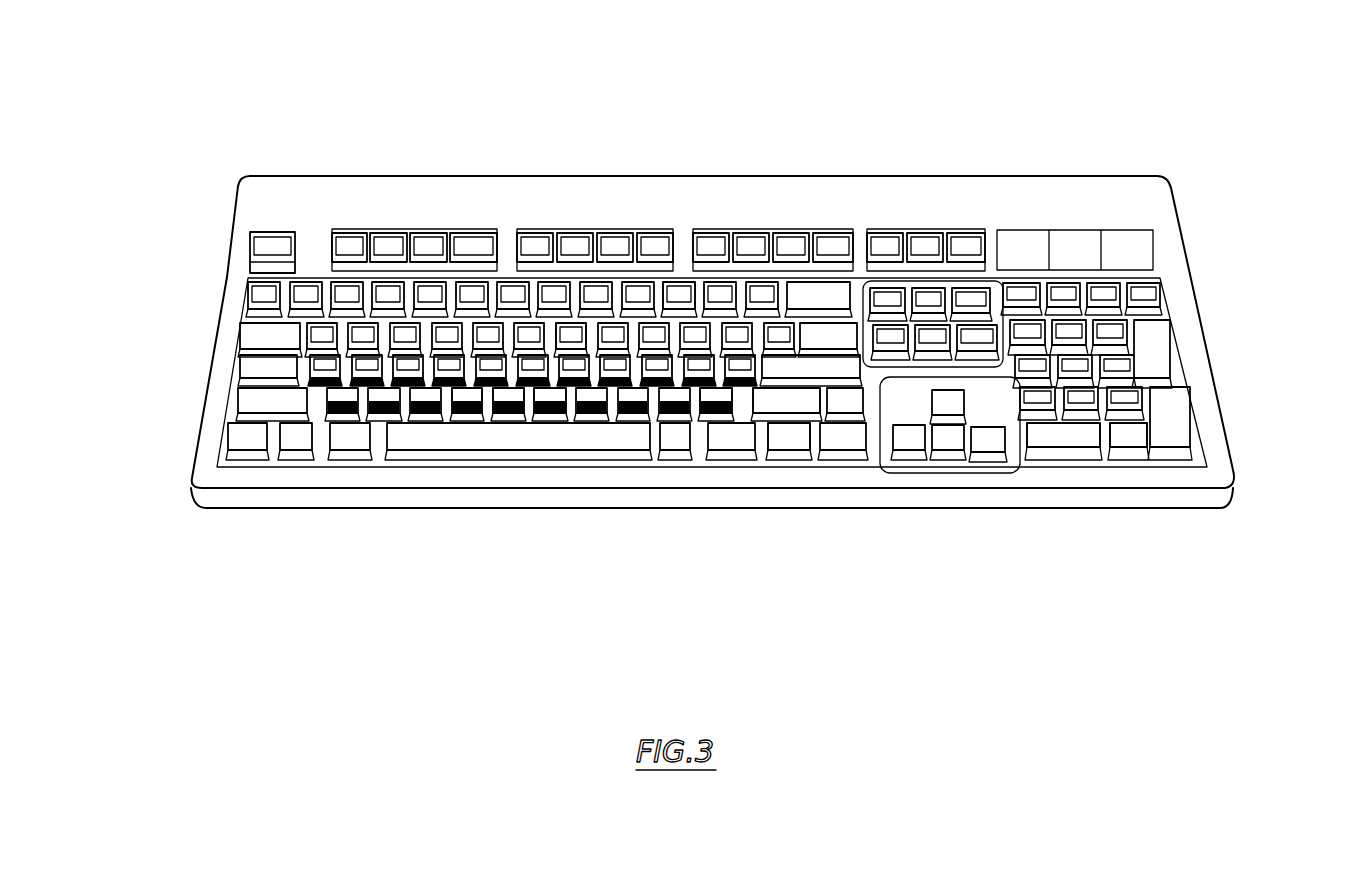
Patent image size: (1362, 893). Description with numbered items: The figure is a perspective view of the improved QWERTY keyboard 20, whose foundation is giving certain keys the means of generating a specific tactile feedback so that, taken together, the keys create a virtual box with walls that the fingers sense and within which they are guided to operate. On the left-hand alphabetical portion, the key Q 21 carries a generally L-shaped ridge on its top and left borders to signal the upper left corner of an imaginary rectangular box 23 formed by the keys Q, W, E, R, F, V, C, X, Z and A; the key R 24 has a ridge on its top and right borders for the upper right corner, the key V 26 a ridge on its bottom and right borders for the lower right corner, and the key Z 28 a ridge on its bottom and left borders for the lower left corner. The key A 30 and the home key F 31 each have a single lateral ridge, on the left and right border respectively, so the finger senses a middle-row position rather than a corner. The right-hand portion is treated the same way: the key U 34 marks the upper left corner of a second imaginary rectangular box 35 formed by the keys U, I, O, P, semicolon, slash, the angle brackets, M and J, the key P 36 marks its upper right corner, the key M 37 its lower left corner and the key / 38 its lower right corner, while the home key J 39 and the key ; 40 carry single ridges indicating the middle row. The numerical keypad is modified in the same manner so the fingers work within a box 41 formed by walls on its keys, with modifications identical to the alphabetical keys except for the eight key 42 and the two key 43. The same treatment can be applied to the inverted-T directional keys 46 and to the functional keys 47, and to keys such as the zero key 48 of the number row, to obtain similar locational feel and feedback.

The keyboard 20 is at (236, 525).
The key Q 21 is at (250, 316).
The imaginary rectangular box 23 is at (482, 415).
The key R 24 is at (430, 278).
The key V 26 is at (457, 400).
The key Z 28 is at (320, 413).
The key A 30 is at (260, 356).
The home key F 31 is at (455, 362).
The key U 34 is at (565, 345).
The imaginary rectangular box 35 is at (757, 390).
The key P 36 is at (682, 283).
The key M 37 is at (596, 425).
The key / 38 is at (745, 425).
The home key J 39 is at (557, 413).
The key ; 40 is at (697, 400).
The box 41 is at (1095, 433).
The key 8 42 is at (1130, 292).
The key 2 43 is at (1067, 433).
The directional keys 46 is at (957, 473).
The functional keys 47 is at (940, 278).
The key 0 48 is at (322, 247).